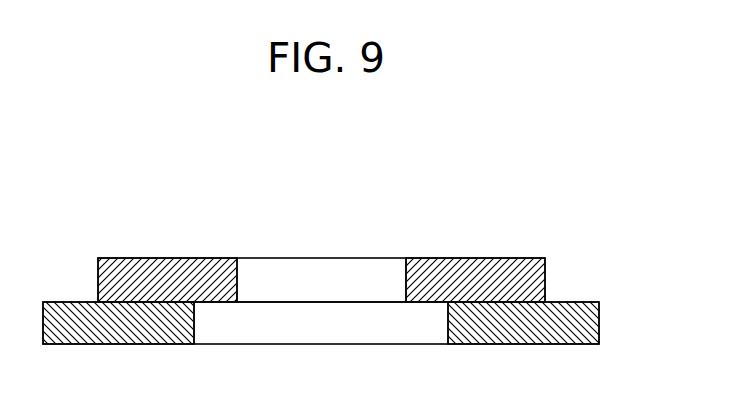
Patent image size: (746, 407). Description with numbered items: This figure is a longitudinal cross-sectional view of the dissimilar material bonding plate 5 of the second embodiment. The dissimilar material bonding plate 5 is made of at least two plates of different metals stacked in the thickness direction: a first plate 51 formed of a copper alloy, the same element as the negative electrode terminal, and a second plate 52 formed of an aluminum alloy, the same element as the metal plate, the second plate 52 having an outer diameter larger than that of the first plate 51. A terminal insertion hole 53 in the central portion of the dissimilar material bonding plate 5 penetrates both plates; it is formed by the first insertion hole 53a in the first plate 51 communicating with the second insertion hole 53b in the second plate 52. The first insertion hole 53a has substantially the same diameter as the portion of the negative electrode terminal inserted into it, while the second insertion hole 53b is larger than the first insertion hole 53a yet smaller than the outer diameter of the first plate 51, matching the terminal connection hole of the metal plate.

The dissimilar material bonding plate 5 is at (365, 233).
The first plate 51 is at (513, 258).
The second plate 52 is at (599, 322).
The terminal insertion hole 53 is at (321, 233).
The first insertion hole 53a is at (237, 278).
The second insertion hole 53b is at (448, 325).